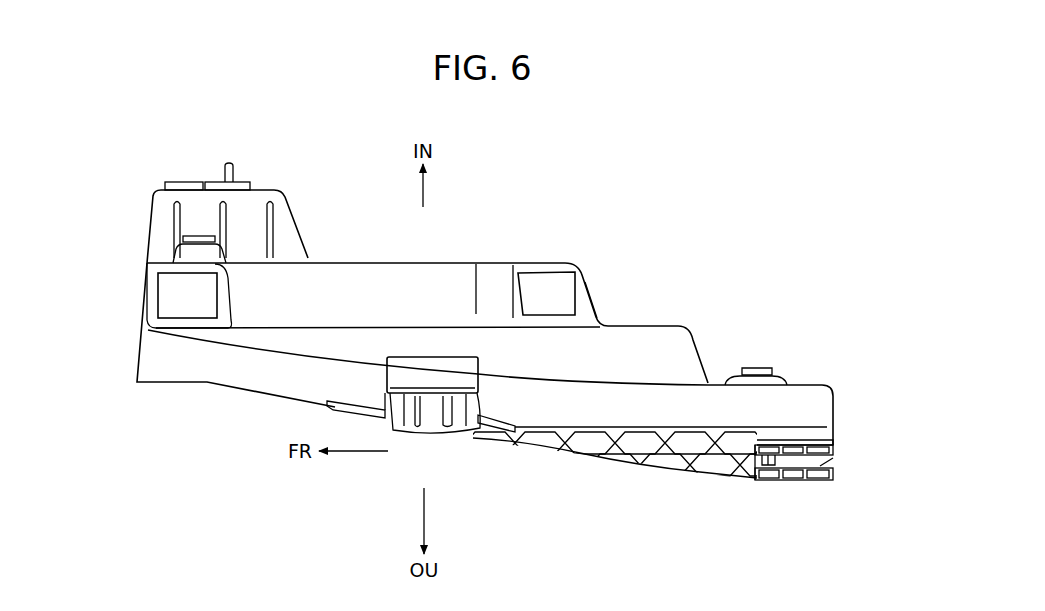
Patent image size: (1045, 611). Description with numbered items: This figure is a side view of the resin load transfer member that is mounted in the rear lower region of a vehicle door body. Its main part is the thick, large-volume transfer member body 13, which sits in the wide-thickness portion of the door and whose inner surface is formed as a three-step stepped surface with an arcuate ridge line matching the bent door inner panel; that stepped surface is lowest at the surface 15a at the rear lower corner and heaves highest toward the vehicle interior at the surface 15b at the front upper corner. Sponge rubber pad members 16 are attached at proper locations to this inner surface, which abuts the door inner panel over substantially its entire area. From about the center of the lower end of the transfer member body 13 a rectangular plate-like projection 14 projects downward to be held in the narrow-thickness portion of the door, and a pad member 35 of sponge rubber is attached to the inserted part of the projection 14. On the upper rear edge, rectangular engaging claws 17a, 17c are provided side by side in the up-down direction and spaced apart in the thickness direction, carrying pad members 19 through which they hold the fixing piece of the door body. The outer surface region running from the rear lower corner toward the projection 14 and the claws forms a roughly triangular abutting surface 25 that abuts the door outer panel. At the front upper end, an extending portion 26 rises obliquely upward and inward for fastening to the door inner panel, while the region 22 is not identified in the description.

The transfer member body 13 is at (490, 262).
The projection 14 is at (405, 378).
The surface 15a is at (710, 383).
The surface 15b is at (335, 258).
The pad members 16 is at (200, 236).
The engaging claw 17a is at (818, 480).
The engaging claw 17c is at (833, 452).
The pad members 19 is at (586, 192).
The front lower portion 22 is at (223, 387).
The abutting surface 25 is at (697, 432).
The extending portion 26 is at (152, 236).
The pad member 35 is at (458, 390).